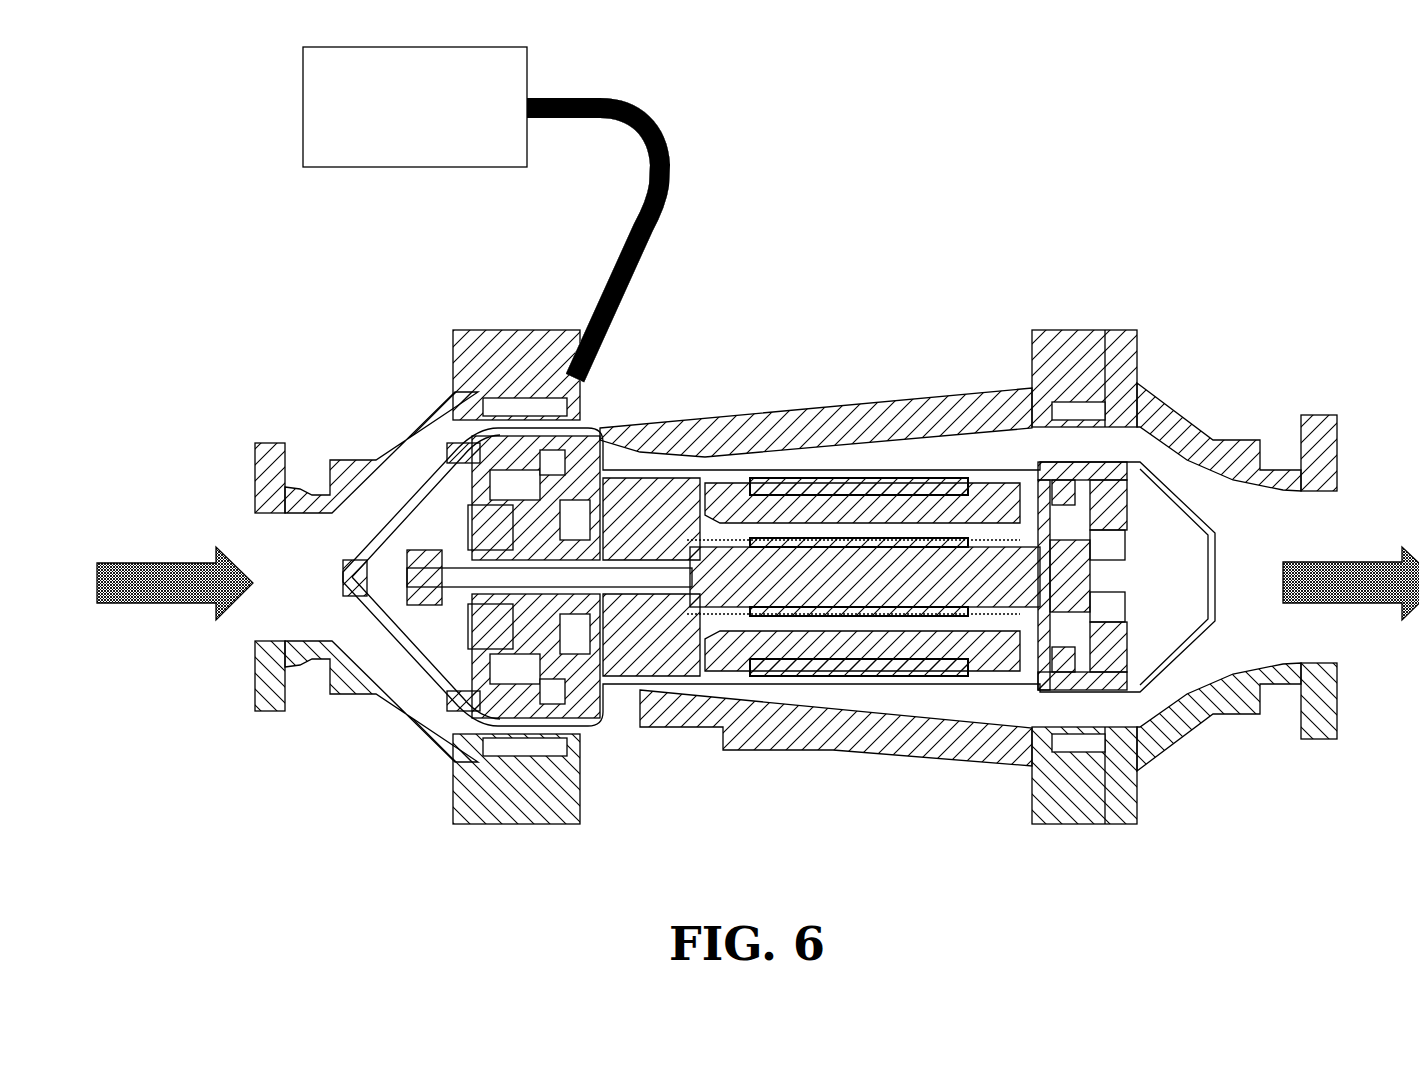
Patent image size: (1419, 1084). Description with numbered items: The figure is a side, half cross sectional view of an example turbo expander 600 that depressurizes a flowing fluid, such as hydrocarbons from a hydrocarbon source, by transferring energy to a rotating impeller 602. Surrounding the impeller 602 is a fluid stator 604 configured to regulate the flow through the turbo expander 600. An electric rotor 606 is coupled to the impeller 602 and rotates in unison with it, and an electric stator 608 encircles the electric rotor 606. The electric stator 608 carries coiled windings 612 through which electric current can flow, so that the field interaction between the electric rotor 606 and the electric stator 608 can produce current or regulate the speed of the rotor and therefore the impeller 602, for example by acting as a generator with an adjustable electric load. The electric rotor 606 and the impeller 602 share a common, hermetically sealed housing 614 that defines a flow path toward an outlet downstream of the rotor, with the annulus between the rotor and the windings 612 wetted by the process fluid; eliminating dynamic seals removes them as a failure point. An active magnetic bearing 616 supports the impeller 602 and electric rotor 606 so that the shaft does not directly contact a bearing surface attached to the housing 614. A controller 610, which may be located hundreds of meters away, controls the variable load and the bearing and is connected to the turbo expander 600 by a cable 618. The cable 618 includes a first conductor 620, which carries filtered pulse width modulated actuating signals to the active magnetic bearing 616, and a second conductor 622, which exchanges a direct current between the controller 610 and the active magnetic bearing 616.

The turbo expander 600 is at (1005, 158).
The impeller 602 is at (620, 550).
The fluid stator 604 is at (604, 475).
The electric rotor 606 is at (797, 583).
The electric stator 608 is at (937, 712).
The controller 610 is at (385, 150).
The coiled windings 612 is at (1000, 653).
The housing 614 is at (984, 403).
The active magnetic bearing 616 is at (484, 603).
The cable 618 is at (703, 141).
The first conductor 620 is at (668, 163).
The second conductor 622 is at (642, 213).